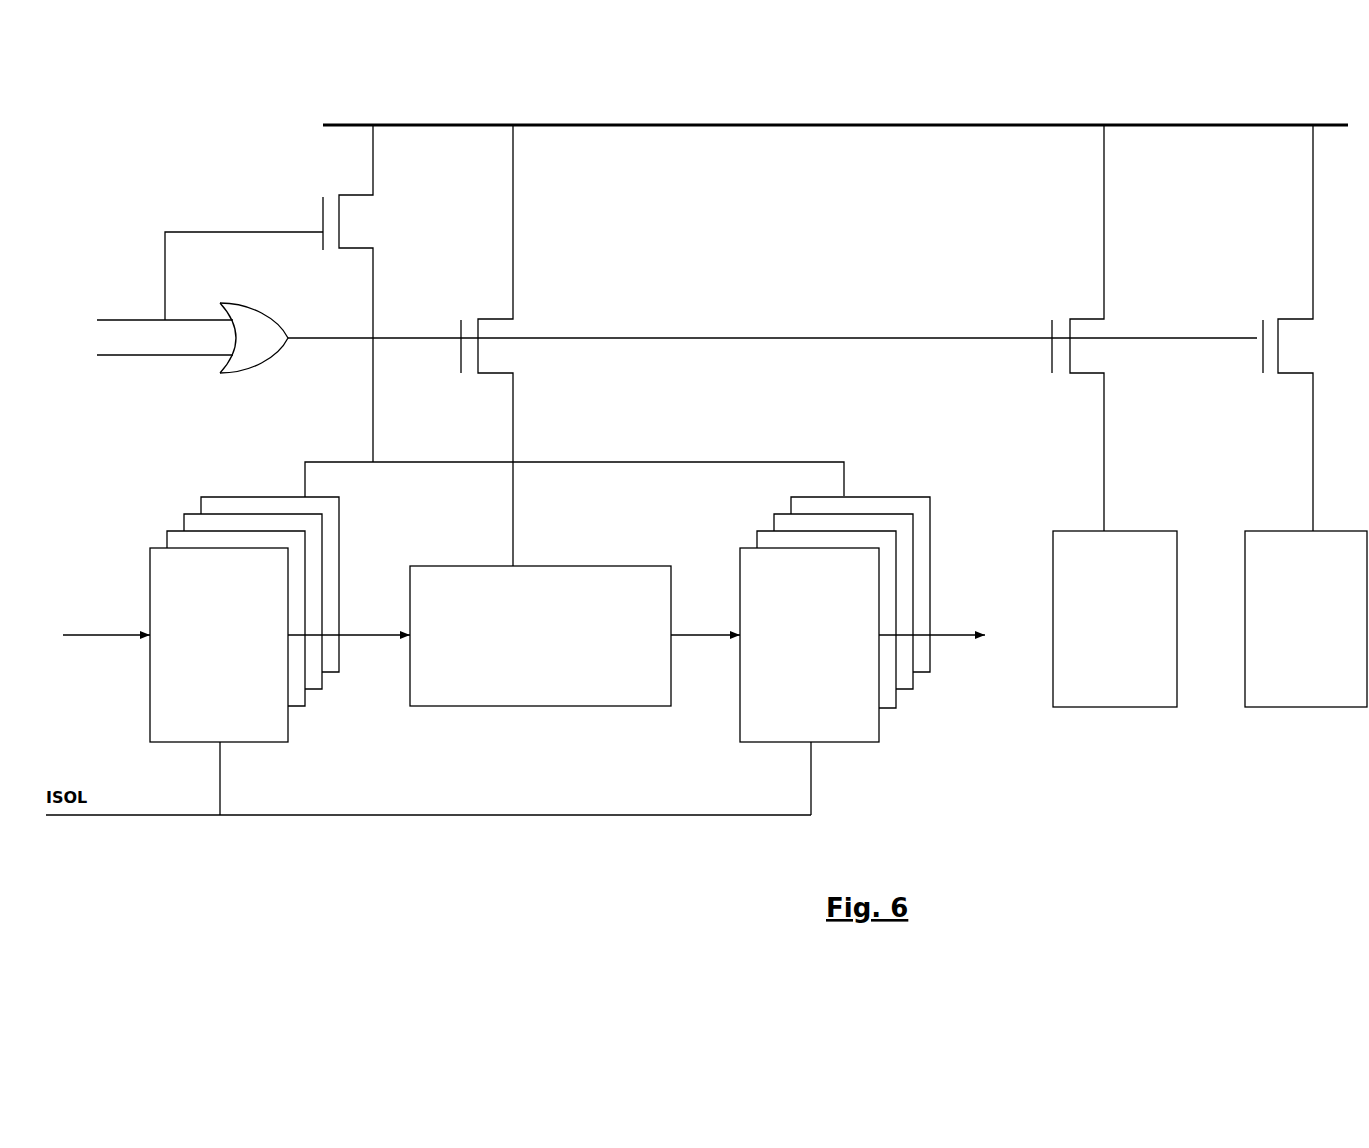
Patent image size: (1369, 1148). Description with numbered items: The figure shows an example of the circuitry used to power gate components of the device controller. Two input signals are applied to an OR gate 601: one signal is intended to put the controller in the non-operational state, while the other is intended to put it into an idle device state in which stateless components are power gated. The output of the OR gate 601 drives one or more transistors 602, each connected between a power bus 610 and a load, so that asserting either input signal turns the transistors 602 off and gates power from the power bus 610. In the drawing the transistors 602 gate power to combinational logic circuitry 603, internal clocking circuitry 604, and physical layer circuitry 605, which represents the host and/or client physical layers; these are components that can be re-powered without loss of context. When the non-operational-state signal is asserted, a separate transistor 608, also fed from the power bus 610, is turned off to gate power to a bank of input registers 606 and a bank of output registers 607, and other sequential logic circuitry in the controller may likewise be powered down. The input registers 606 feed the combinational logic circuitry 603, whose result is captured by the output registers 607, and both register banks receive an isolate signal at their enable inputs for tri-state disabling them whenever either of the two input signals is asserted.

The OR gate 601 is at (270, 302).
The transistors 602 is at (492, 317).
The combinational logic circuitry 603 is at (575, 636).
The internal clocking circuitry 604 is at (1115, 619).
The physical layer circuitry 605 is at (1306, 619).
The input registers 606 is at (150, 580).
The output registers 607 is at (736, 580).
The transistor 608 is at (343, 195).
The power bus 610 is at (597, 123).